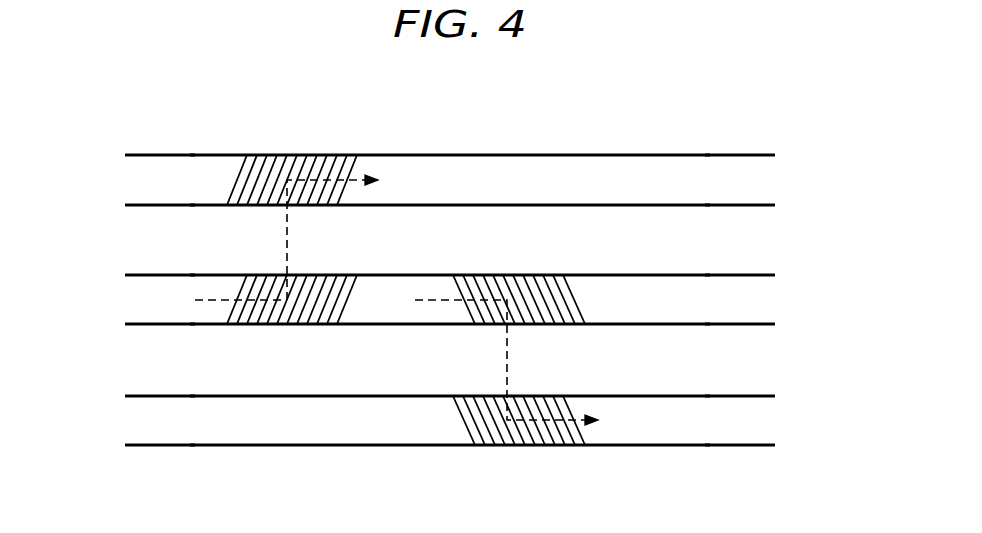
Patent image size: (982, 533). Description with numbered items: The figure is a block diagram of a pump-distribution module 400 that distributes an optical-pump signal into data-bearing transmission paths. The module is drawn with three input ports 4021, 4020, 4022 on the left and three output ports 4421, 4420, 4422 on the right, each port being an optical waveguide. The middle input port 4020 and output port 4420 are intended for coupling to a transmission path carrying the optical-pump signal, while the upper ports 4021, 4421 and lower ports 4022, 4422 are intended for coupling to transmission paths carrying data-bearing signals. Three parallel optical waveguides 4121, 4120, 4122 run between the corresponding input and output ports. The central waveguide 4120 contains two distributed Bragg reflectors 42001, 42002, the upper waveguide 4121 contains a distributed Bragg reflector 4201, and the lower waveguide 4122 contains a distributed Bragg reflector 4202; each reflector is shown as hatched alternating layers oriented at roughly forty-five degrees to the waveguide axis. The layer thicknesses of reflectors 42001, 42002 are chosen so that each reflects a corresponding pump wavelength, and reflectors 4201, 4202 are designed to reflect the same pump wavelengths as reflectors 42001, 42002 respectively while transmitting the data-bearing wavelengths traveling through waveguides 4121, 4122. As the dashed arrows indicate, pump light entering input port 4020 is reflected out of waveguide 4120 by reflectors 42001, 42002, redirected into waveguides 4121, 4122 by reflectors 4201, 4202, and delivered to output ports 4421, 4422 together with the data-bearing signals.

The pump-distribution module 400 is at (475, 80).
The input port 4021 is at (150, 177).
The input port 4020 is at (150, 299).
The input port 4022 is at (150, 420).
The optical waveguide 4121 is at (543, 175).
The optical waveguide 4120 is at (400, 294).
The optical waveguide 4122 is at (383, 425).
The distributed Bragg reflector 4201 is at (360, 152).
The distributed Bragg reflector 42001 is at (335, 330).
The distributed Bragg reflector 42002 is at (563, 268).
The distributed Bragg reflector 4202 is at (587, 450).
The output port 4421 is at (747, 180).
The output port 4420 is at (747, 300).
The output port 4422 is at (747, 421).